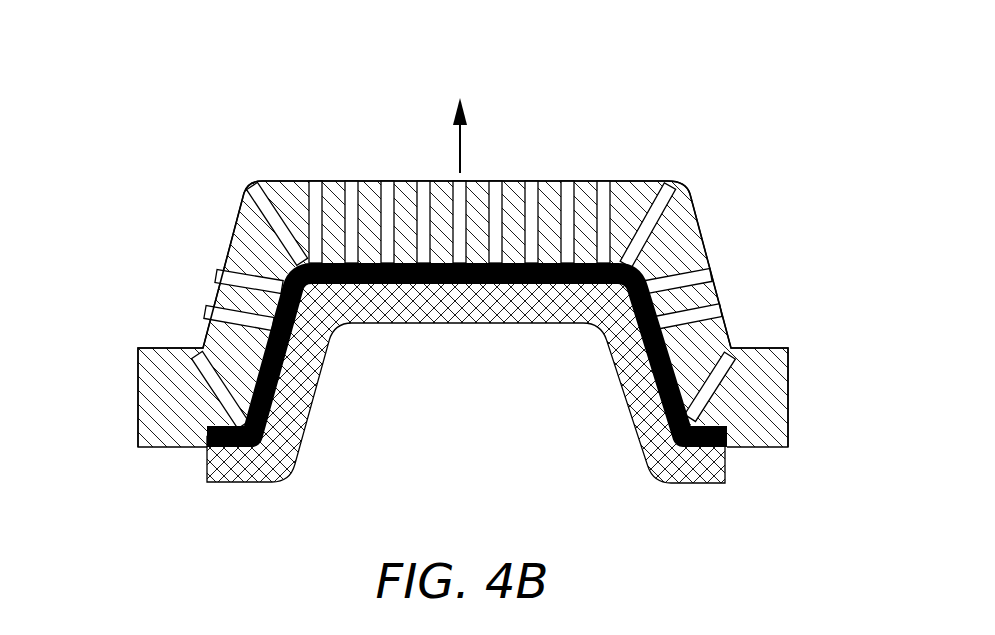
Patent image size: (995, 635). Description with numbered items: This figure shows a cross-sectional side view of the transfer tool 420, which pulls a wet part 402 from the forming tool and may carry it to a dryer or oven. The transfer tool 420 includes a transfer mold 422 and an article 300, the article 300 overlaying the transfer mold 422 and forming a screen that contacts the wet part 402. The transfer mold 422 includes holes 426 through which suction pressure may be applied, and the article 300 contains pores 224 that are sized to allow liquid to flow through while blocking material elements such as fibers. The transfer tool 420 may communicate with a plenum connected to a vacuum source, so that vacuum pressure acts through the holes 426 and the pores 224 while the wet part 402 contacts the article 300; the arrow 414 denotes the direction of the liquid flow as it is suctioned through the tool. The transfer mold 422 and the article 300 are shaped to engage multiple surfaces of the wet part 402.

The transfer tool 420 is at (417, 257).
The transfer mold 422 is at (185, 348).
The holes 426 is at (500, 297).
The arrow 414 is at (462, 143).
The article 300 is at (395, 285).
The pores 224 is at (458, 283).
The wet part 402 is at (617, 380).